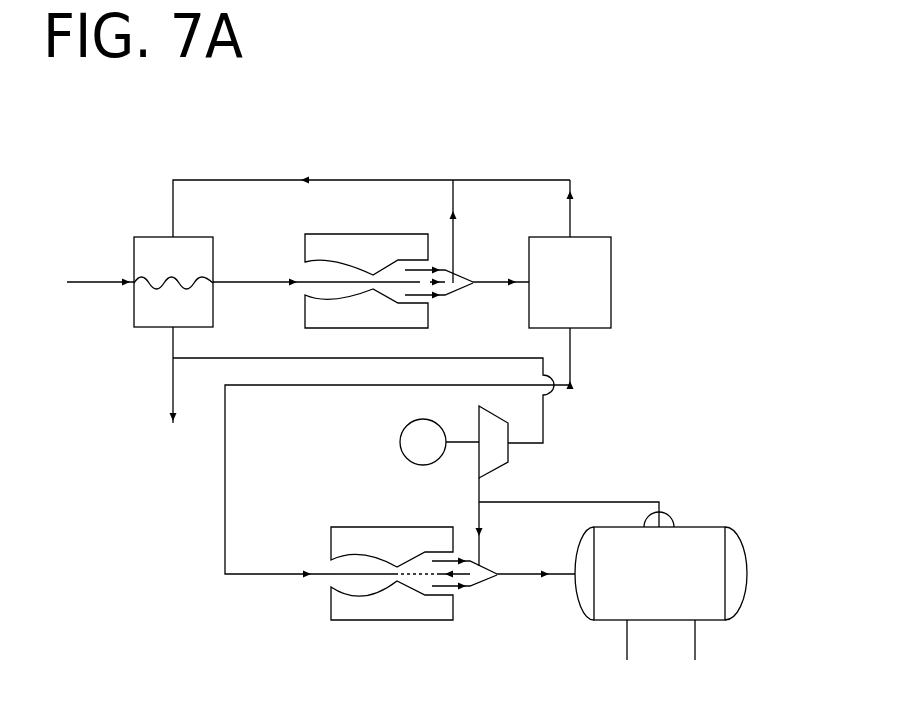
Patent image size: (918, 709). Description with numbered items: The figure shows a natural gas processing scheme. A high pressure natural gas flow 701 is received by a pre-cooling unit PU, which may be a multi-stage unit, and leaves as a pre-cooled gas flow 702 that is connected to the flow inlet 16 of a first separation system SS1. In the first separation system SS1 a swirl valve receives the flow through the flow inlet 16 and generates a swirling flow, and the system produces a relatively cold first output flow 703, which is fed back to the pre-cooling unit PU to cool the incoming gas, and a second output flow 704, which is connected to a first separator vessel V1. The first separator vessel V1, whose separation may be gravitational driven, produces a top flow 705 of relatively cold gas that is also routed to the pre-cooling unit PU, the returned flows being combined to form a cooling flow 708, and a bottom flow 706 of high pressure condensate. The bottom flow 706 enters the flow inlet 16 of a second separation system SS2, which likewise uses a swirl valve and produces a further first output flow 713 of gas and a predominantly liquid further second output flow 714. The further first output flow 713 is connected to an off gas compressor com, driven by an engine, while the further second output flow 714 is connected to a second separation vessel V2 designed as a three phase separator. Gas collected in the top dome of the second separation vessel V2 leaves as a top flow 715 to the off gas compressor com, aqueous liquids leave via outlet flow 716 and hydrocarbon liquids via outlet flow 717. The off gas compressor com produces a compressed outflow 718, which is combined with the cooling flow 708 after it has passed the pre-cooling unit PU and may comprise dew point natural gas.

The gas flow 701 is at (93, 282).
The pre-cooled gas flow 702 is at (251, 282).
The first output flow 703 is at (453, 251).
The second output flow 704 is at (488, 284).
The top flow 705 is at (570, 208).
The bottom flow 706 is at (570, 358).
The cooling flow 708 is at (235, 178).
The further first output flow 713 is at (483, 548).
The further second output flow 714 is at (485, 585).
The top flow 715 is at (578, 501).
The outlet flow 716 is at (624, 652).
The outlet flow 717 is at (697, 645).
The compressed outflow 718 is at (439, 307).
The flow inlet 16 is at (305, 275).
The pre-cooling unit PU is at (143, 305).
The first separation system SS1 is at (347, 247).
The second separation system SS2 is at (357, 537).
The first separator vessel V1 is at (597, 265).
The second separation vessel V2 is at (695, 540).
The off gas compressor com is at (495, 420).